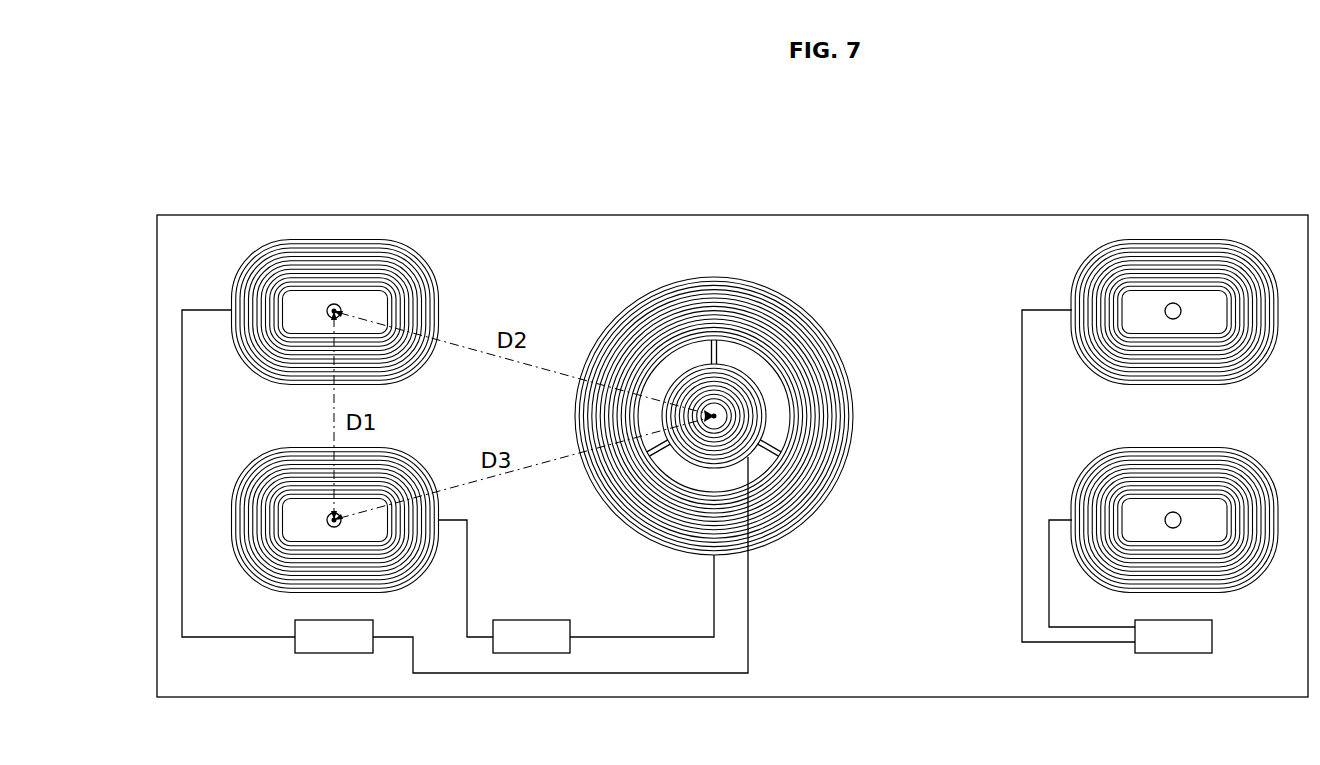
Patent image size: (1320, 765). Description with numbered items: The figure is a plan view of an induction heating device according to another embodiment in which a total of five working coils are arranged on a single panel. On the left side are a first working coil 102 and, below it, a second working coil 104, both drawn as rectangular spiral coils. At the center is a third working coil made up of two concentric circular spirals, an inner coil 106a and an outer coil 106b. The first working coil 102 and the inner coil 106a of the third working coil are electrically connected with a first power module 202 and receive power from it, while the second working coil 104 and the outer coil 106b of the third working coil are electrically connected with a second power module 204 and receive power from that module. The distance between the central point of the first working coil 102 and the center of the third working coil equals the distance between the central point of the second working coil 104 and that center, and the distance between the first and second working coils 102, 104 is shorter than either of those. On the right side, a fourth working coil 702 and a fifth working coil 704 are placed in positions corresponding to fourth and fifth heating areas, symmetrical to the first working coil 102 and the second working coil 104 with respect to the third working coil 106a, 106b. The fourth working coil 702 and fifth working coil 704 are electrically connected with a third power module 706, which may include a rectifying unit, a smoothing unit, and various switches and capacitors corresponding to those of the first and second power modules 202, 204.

The first working coil 102 is at (246, 252).
The second working coil 104 is at (243, 474).
The inner coil of the third working coil 106a is at (720, 416).
The outer coil of the third working coil 106b is at (765, 368).
The first power module 202 is at (334, 653).
The second power module 204 is at (531, 653).
The fourth working coil 702 is at (1088, 256).
The fifth working coil 704 is at (1083, 470).
The third power module 706 is at (1172, 653).